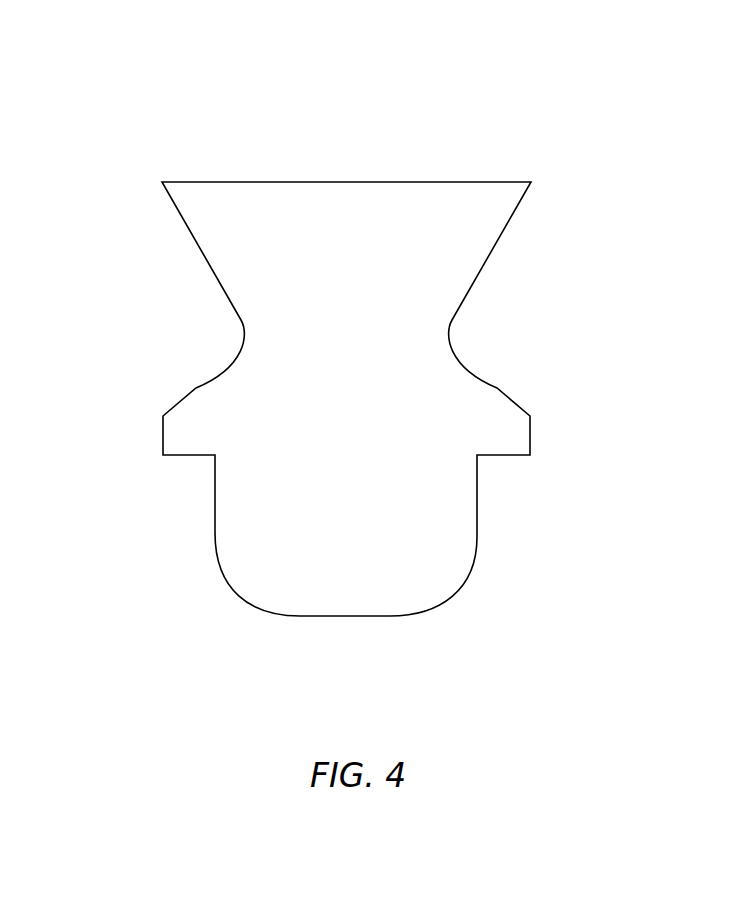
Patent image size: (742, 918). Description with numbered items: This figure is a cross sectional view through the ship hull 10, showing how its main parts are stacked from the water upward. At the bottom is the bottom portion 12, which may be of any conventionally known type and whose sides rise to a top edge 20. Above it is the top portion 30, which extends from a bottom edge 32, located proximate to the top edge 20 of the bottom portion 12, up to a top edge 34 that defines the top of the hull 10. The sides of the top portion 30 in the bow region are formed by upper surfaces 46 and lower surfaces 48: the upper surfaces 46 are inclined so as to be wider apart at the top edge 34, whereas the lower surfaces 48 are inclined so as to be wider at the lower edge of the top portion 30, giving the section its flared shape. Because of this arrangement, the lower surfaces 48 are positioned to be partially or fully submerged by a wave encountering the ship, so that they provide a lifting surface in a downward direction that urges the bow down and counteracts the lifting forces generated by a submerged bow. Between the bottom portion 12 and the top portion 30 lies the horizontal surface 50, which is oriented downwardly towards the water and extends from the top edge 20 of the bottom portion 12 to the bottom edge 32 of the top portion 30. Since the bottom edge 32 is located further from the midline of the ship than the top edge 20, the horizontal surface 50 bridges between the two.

The ship hull 10 is at (508, 128).
The top portion 30 is at (628, 248).
The top edge 34 is at (162, 183).
The upper surfaces 46 is at (203, 258).
The lower surfaces 48 is at (183, 400).
The bottom edge 32 is at (163, 458).
The horizontal surface 50 is at (509, 456).
The top edge 20 is at (478, 457).
The bottom portion 12 is at (453, 592).